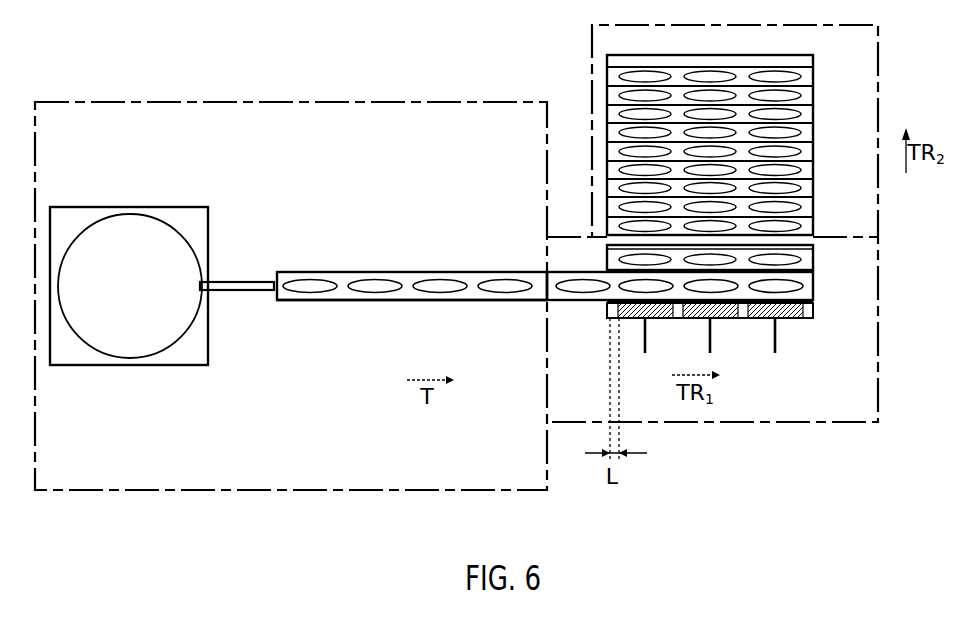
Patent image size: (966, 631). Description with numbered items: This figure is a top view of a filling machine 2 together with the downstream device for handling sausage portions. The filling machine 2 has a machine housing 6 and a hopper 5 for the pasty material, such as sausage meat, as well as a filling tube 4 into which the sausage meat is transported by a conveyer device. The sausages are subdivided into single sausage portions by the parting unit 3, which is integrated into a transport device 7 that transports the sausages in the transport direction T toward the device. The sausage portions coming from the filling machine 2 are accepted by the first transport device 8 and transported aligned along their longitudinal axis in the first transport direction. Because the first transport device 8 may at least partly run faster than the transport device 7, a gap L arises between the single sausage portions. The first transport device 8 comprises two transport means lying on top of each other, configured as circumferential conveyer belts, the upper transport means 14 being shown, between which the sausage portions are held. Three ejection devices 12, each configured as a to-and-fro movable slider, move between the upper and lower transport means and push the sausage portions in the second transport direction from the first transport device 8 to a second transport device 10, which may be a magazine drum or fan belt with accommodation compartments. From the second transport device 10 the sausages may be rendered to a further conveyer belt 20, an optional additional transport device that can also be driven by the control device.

The filling machine 2 is at (456, 257).
The parting unit 3 is at (403, 272).
The filling tube 4 is at (241, 292).
The hopper 5 is at (180, 232).
The machine housing 6 is at (208, 340).
The transport device 7 is at (348, 301).
The first transport device 8 is at (542, 266).
The second transport device 10 is at (815, 247).
The ejection device 12 is at (664, 320).
The upper transport means 14 is at (815, 288).
The further conveyer belt 20 is at (815, 70).